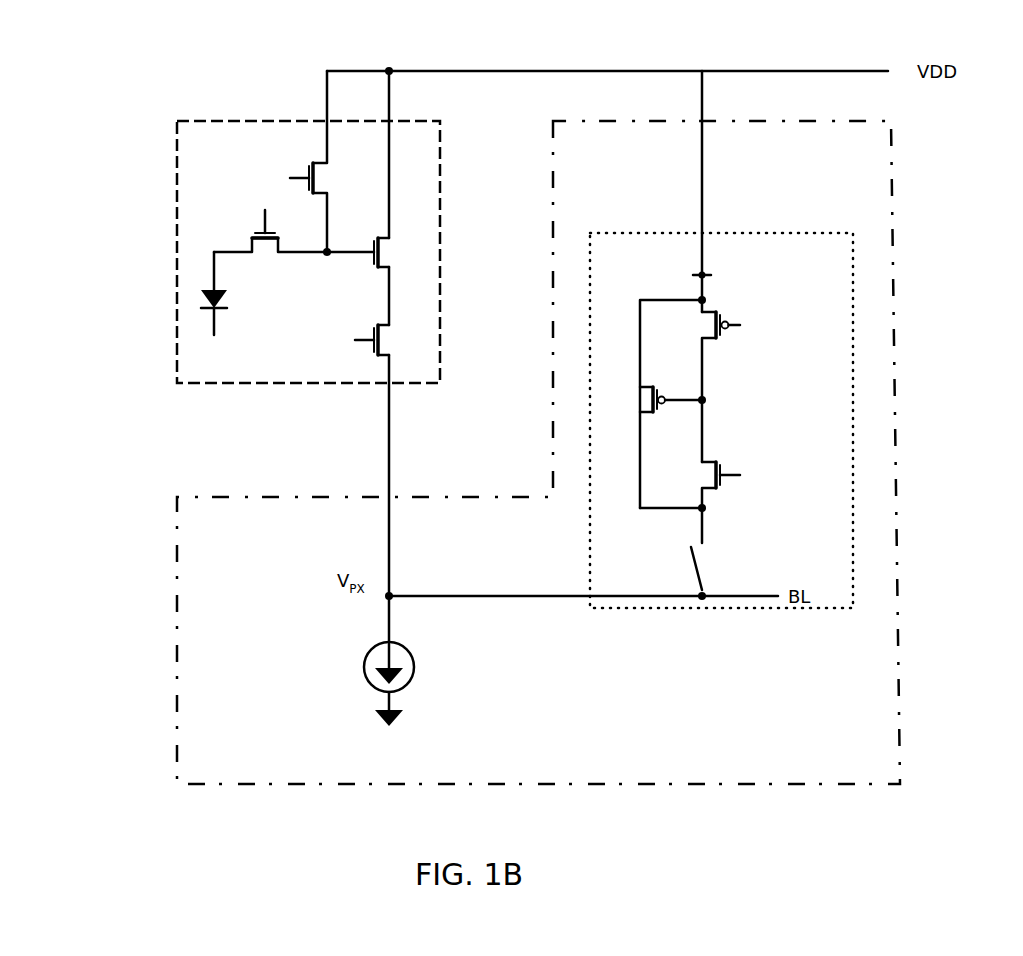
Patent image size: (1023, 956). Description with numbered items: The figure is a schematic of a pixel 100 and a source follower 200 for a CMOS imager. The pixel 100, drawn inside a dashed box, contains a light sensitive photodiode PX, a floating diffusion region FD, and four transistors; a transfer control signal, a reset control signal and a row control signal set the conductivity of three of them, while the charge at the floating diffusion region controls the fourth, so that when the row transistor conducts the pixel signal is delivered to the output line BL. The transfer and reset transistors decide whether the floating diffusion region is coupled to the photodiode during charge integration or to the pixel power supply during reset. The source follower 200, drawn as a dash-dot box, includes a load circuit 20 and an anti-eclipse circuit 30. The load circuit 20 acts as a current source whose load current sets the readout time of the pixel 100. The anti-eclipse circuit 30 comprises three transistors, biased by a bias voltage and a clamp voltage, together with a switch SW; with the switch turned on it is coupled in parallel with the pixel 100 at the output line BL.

The pixel 100 is at (262, 382).
The source follower 200 is at (892, 302).
The anti-eclipse circuit 30 is at (720, 608).
The load circuit 20 is at (361, 662).